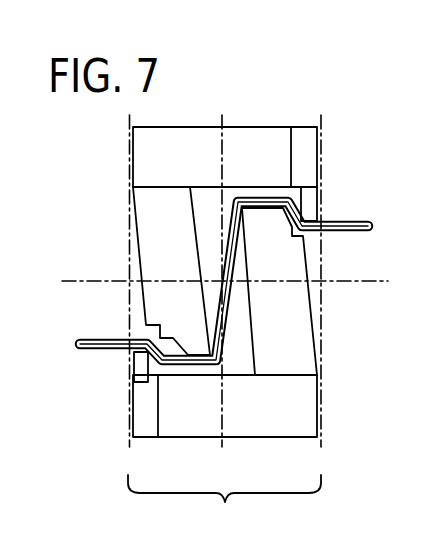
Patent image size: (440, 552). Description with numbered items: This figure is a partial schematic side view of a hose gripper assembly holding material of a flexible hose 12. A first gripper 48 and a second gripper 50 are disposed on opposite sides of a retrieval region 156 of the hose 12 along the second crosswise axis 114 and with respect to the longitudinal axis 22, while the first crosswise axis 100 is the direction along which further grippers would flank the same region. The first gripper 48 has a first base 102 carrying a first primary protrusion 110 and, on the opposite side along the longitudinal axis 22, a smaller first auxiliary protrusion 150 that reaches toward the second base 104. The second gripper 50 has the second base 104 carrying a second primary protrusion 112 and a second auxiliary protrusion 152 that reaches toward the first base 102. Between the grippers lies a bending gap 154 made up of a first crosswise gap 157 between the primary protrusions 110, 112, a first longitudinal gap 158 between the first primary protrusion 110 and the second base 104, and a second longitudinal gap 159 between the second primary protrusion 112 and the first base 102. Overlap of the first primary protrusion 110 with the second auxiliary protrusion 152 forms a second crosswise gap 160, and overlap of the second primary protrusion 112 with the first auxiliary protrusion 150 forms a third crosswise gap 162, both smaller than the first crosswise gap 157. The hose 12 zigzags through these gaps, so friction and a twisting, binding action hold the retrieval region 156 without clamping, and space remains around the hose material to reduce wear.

The flexible hose 12 is at (335, 228).
The longitudinal axis 22 is at (70, 279).
The first gripper 48 is at (258, 62).
The second gripper 50 is at (145, 452).
The first crosswise axis 100 is at (221, 278).
The first base 102 is at (175, 125).
The second base 104 is at (292, 430).
The first primary protrusion 110 is at (143, 248).
The second primary protrusion 112 is at (309, 303).
The second crosswise axis 114 is at (223, 124).
The first auxiliary protrusion 150 is at (308, 203).
The second auxiliary protrusion 152 is at (133, 369).
The bending gap 154 is at (233, 341).
The retrieval region 156 is at (224, 508).
The first crosswise gap 157 is at (207, 293).
The first longitudinal gap 158 is at (180, 370).
The second longitudinal gap 159 is at (267, 194).
The second crosswise gap 160 is at (146, 357).
The third crosswise gap 162 is at (295, 190).